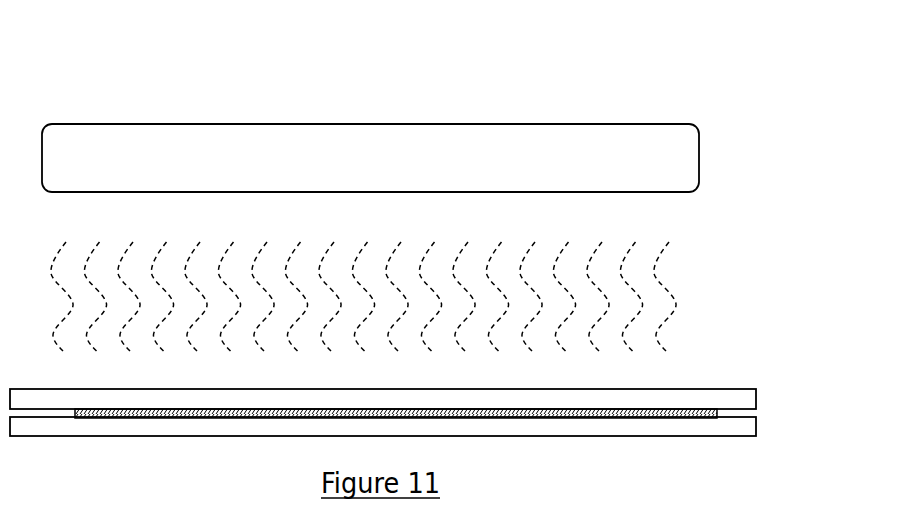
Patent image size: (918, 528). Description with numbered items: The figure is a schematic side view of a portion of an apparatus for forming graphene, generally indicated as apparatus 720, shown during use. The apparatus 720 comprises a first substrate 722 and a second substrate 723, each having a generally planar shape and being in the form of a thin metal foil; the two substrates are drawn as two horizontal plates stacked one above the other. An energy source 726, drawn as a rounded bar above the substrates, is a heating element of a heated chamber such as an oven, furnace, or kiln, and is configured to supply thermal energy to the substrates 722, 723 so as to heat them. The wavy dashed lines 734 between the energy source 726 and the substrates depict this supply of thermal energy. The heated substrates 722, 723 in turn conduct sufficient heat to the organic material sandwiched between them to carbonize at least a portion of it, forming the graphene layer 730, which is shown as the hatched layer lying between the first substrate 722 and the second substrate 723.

The apparatus for forming graphene 720 is at (655, 70).
The energy source 726 is at (688, 156).
The emitted light 734 is at (652, 280).
The second substrate 723 is at (752, 403).
The graphene layer 730 is at (692, 410).
The first substrate 722 is at (748, 427).